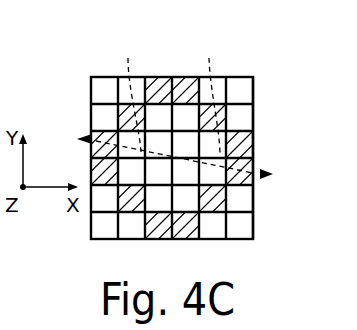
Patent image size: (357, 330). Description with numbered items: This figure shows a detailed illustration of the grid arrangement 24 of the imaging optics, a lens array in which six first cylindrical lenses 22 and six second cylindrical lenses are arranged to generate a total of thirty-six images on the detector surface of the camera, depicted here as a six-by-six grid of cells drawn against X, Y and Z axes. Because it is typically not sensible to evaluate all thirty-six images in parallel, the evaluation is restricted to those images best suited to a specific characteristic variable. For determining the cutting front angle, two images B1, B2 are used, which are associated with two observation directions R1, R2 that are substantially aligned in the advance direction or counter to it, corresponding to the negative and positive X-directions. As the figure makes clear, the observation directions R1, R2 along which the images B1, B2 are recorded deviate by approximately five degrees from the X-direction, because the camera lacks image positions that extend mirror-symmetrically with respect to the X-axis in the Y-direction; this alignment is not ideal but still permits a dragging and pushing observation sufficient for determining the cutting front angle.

The first cylindrical lenses 22 is at (105, 92).
The grid arrangement 24 is at (264, 108).
The first observation direction R1 is at (131, 94).
The second observation direction R2 is at (211, 95).
The first image B1 is at (92, 136).
The second image B2 is at (256, 163).